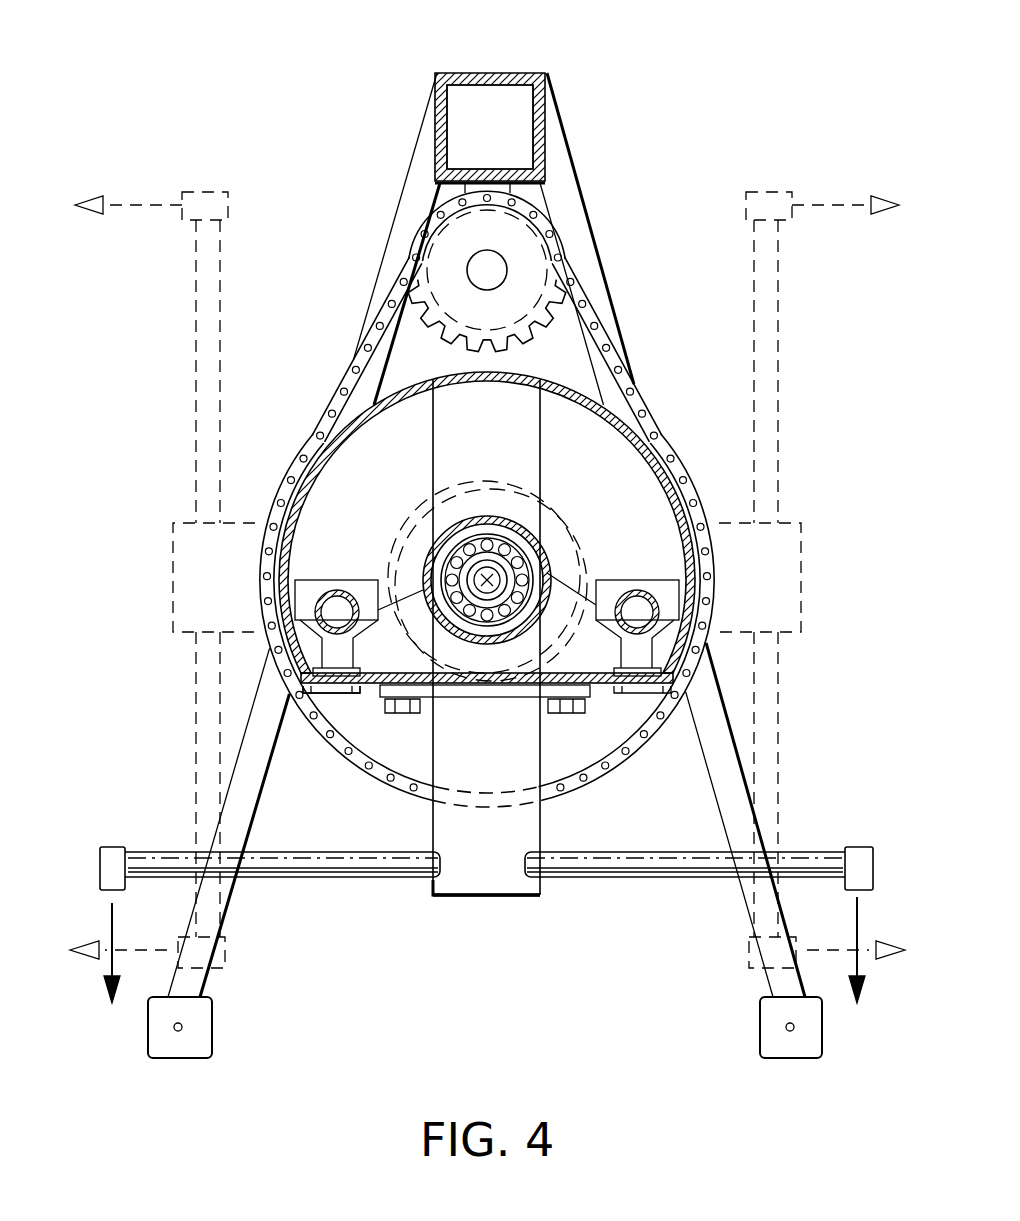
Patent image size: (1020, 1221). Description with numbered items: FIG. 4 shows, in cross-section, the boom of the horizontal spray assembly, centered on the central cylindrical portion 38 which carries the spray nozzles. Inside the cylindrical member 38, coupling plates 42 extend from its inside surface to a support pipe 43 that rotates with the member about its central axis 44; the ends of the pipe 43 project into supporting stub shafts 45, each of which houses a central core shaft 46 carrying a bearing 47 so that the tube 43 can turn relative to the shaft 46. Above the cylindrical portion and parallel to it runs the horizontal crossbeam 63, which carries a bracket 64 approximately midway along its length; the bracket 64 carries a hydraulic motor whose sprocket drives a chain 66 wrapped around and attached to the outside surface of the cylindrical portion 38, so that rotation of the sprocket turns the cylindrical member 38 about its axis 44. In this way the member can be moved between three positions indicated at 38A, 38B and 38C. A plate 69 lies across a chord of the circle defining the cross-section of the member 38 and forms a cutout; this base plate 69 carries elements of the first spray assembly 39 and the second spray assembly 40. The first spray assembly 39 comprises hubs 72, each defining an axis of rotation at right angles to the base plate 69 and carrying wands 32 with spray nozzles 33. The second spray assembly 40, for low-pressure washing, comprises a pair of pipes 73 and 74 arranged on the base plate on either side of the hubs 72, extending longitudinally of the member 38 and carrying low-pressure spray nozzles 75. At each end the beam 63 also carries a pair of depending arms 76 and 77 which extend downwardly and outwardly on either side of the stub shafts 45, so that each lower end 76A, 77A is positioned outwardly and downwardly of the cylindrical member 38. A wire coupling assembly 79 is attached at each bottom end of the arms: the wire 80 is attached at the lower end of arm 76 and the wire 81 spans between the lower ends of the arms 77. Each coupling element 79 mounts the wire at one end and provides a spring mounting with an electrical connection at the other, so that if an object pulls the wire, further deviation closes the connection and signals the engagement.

The wand 32 is at (333, 866).
The spray nozzle 33 is at (112, 847).
The central cylindrical portion 38 is at (352, 428).
The first position of cylindrical member 38A is at (166, 577).
The second position of cylindrical member 38B is at (491, 955).
The third position of cylindrical member 38C is at (808, 577).
The first spray assembly 39 is at (426, 915).
The second spray assembly 40 is at (328, 702).
The coupling plate 42 is at (412, 602).
The support pipe 43 is at (443, 551).
The central axis 44 is at (503, 533).
The supporting stub shaft 45 is at (558, 515).
The central core shaft 46 is at (560, 558).
The bearing 47 is at (448, 612).
The horizontal crossbeam 63 is at (518, 70).
The bracket 64 is at (508, 185).
The chain 66 is at (333, 368).
The plate 69 is at (482, 690).
The hub 72 is at (519, 884).
The pipe 73 is at (347, 592).
The pipe 74 is at (626, 595).
The low pressure spray nozzle 75 is at (349, 702).
The depending arm 76 is at (393, 207).
The lower end of arm 76A is at (203, 987).
The depending arm 77 is at (587, 200).
The lower end of arm 77A is at (782, 981).
The wire coupling assembly 79 is at (165, 1060).
The wire 80 is at (182, 1027).
The wire 81 is at (792, 1033).